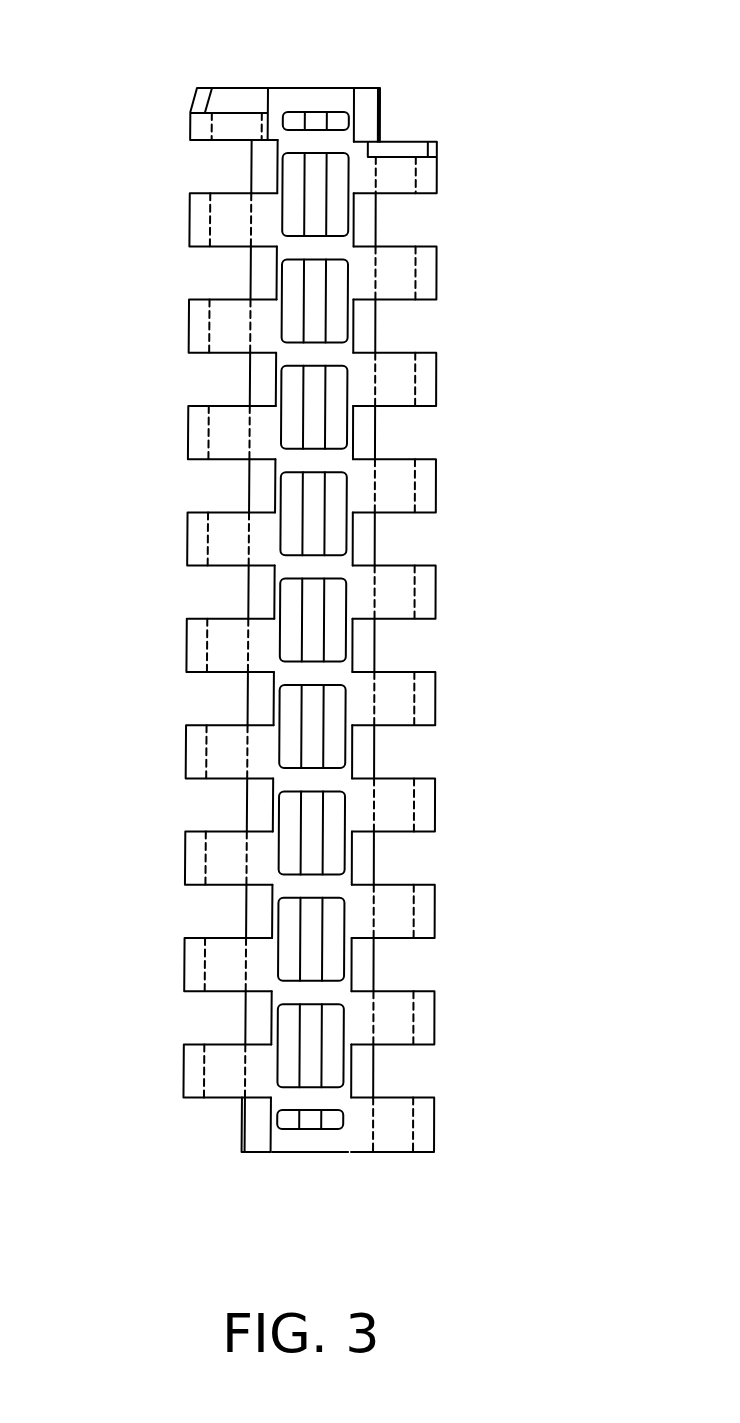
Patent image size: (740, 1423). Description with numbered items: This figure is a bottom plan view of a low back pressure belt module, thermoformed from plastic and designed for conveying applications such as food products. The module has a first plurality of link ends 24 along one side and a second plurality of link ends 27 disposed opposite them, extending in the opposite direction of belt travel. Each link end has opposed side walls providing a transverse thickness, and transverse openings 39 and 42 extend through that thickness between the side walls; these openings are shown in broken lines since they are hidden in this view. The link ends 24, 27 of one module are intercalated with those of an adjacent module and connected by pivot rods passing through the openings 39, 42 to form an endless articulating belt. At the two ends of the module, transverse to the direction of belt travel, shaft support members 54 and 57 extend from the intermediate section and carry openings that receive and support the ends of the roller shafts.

The first plurality of link ends 24 is at (438, 168).
The second plurality of link ends 27 is at (188, 222).
The transverse opening 39 is at (410, 1015).
The transverse opening 42 is at (205, 1072).
The shaft support member 54 is at (317, 1152).
The shaft support member 57 is at (302, 88).